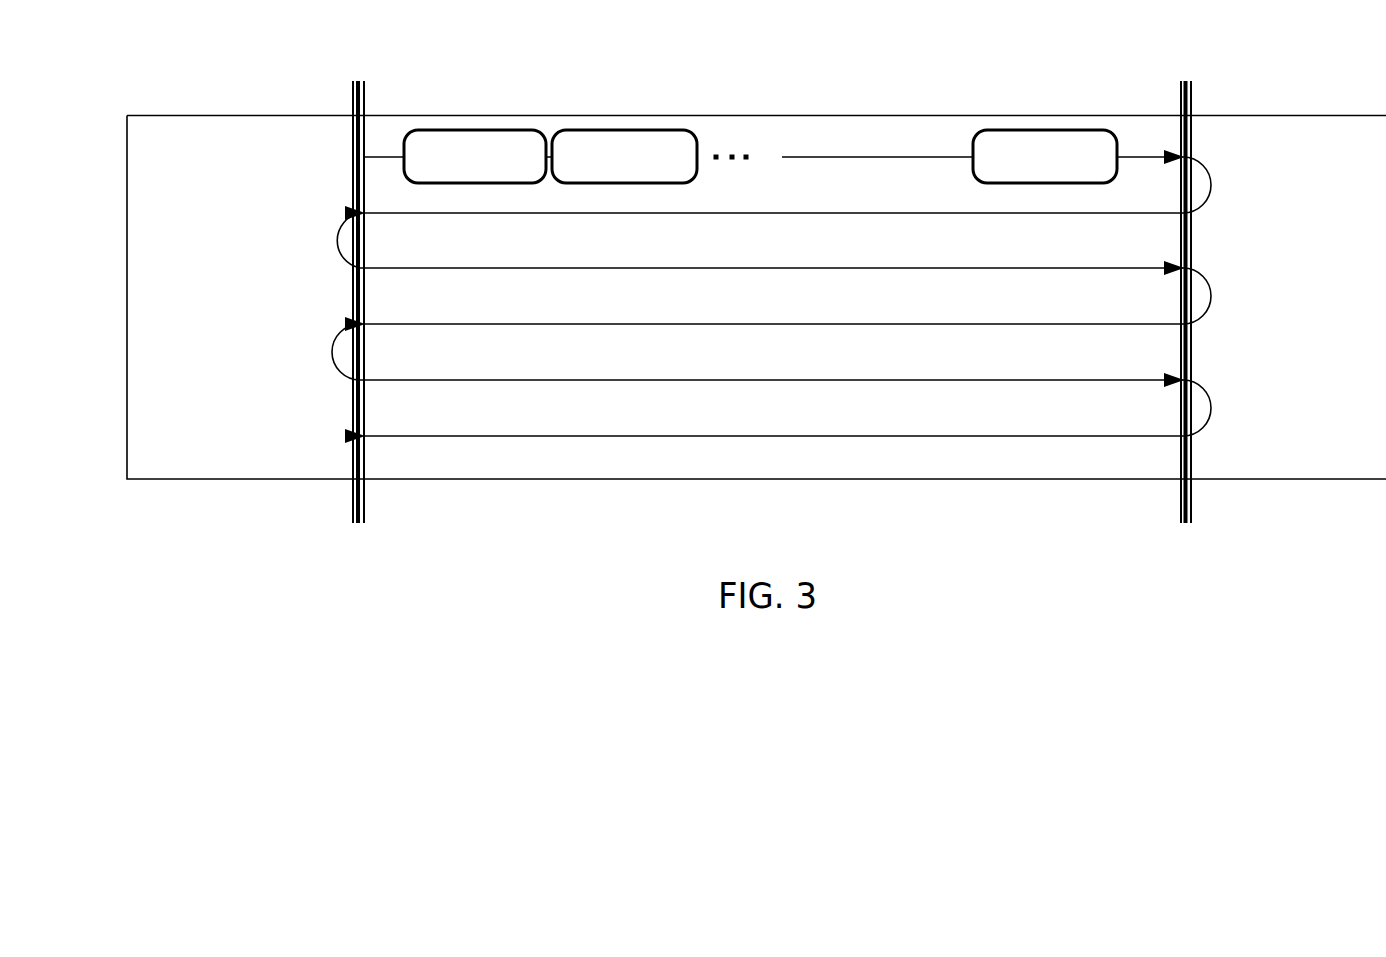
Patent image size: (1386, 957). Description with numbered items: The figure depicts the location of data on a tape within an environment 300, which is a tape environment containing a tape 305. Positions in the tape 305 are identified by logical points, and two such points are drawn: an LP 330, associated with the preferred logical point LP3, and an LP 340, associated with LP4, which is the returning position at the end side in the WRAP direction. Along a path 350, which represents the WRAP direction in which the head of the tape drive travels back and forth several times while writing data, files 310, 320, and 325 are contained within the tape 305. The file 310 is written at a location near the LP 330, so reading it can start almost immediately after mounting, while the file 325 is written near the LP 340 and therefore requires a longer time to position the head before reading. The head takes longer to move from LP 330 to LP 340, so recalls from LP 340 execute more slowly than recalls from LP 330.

The environment 300 is at (468, 52).
The tape 305 is at (1287, 116).
The file 310 is at (527, 171).
The file 320 is at (677, 171).
The file 325 is at (1098, 171).
The LP 330 is at (353, 501).
The LP 340 is at (1180, 501).
The path 350 is at (332, 239).